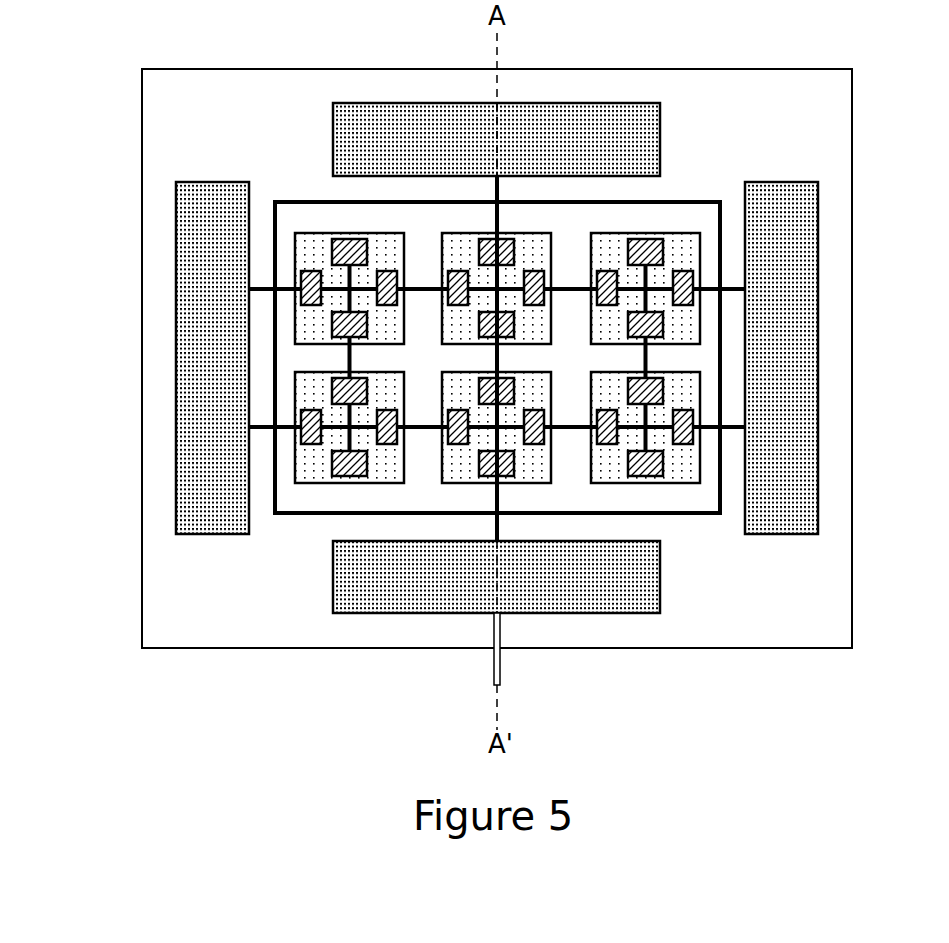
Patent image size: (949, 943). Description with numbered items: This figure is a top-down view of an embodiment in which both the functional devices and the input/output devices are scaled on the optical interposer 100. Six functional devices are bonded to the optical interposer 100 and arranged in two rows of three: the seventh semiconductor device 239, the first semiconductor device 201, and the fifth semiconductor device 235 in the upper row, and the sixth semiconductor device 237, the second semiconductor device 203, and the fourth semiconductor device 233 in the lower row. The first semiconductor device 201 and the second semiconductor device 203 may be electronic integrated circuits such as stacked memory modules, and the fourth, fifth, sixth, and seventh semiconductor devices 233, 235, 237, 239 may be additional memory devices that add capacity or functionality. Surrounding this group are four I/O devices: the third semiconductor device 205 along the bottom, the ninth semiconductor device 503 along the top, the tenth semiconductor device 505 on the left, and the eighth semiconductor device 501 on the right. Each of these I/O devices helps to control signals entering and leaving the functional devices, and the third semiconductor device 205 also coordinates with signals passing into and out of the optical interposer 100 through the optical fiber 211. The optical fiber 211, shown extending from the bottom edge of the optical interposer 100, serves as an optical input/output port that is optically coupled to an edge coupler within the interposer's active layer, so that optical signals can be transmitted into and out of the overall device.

The optical interposer 100 is at (828, 608).
The first semiconductor device 201 is at (528, 246).
The second semiconductor device 203 is at (528, 470).
The third semiconductor device 205 is at (640, 578).
The optical fiber 211 is at (500, 665).
The fourth semiconductor device 233 is at (607, 470).
The fifth semiconductor device 235 is at (614, 246).
The sixth semiconductor device 237 is at (381, 470).
The seventh semiconductor device 239 is at (381, 246).
The eighth semiconductor device 501 is at (797, 335).
The ninth semiconductor device 503 is at (640, 147).
The tenth semiconductor device 505 is at (197, 334).